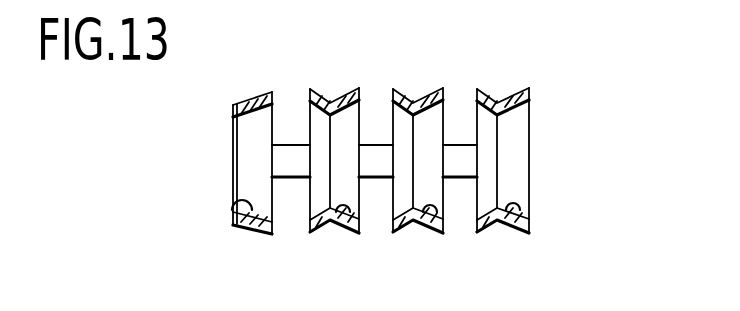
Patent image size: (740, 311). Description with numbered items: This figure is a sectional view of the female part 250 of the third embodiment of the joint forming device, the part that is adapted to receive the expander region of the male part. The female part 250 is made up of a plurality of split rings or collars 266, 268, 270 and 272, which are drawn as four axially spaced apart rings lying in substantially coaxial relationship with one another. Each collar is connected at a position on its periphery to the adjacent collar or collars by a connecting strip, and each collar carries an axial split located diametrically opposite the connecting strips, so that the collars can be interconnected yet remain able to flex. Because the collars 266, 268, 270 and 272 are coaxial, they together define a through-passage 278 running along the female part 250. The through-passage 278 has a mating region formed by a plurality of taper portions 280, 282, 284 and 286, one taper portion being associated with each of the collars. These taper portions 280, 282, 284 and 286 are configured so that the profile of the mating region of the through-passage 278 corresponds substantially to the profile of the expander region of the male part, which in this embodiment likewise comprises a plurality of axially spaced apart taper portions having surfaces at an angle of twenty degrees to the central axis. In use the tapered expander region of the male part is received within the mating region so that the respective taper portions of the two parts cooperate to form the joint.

The female part 250 is at (218, 100).
The split ring or collar 266 is at (253, 97).
The split ring or collar 268 is at (337, 97).
The split ring or collar 270 is at (410, 98).
The split ring or collar 272 is at (490, 97).
The through-passage 278 is at (245, 162).
The taper portion 280 is at (235, 201).
The taper portion 282 is at (350, 210).
The taper portion 284 is at (435, 210).
The taper portion 286 is at (522, 210).